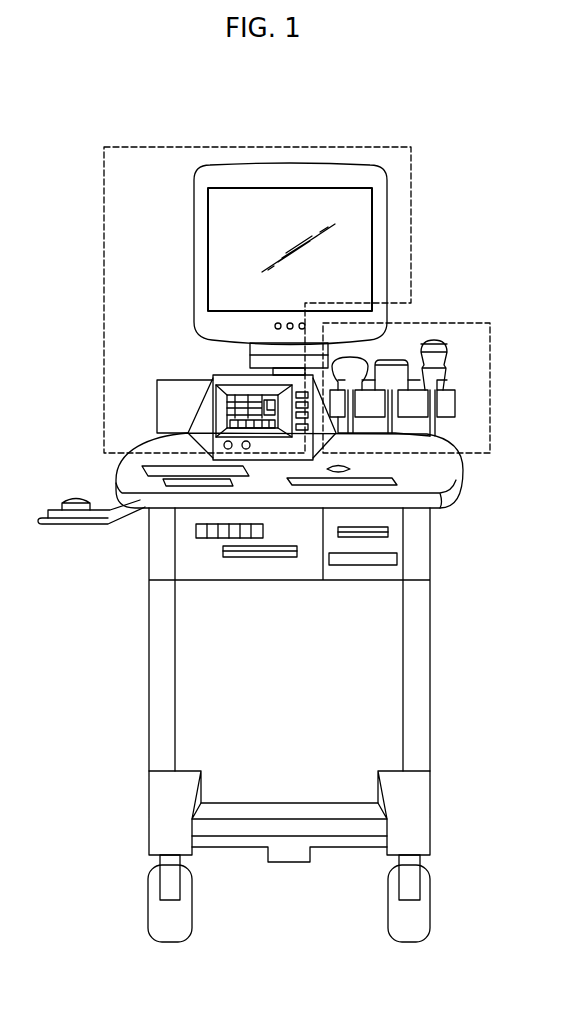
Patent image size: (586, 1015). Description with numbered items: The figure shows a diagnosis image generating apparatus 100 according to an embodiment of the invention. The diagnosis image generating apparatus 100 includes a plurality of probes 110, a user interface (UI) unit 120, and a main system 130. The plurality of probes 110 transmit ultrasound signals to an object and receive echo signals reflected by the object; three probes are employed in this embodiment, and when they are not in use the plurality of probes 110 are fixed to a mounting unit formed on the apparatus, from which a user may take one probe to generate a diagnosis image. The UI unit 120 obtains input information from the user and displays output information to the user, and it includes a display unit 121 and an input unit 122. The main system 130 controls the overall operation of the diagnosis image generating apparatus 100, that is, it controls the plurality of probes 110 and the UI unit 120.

The diagnosis image generating apparatus 100 is at (301, 117).
The plurality of probes 110 is at (455, 322).
The user interface (UI) unit 120 is at (412, 163).
The display unit 121 is at (228, 246).
The input unit 122 is at (218, 412).
The main system 130 is at (127, 535).